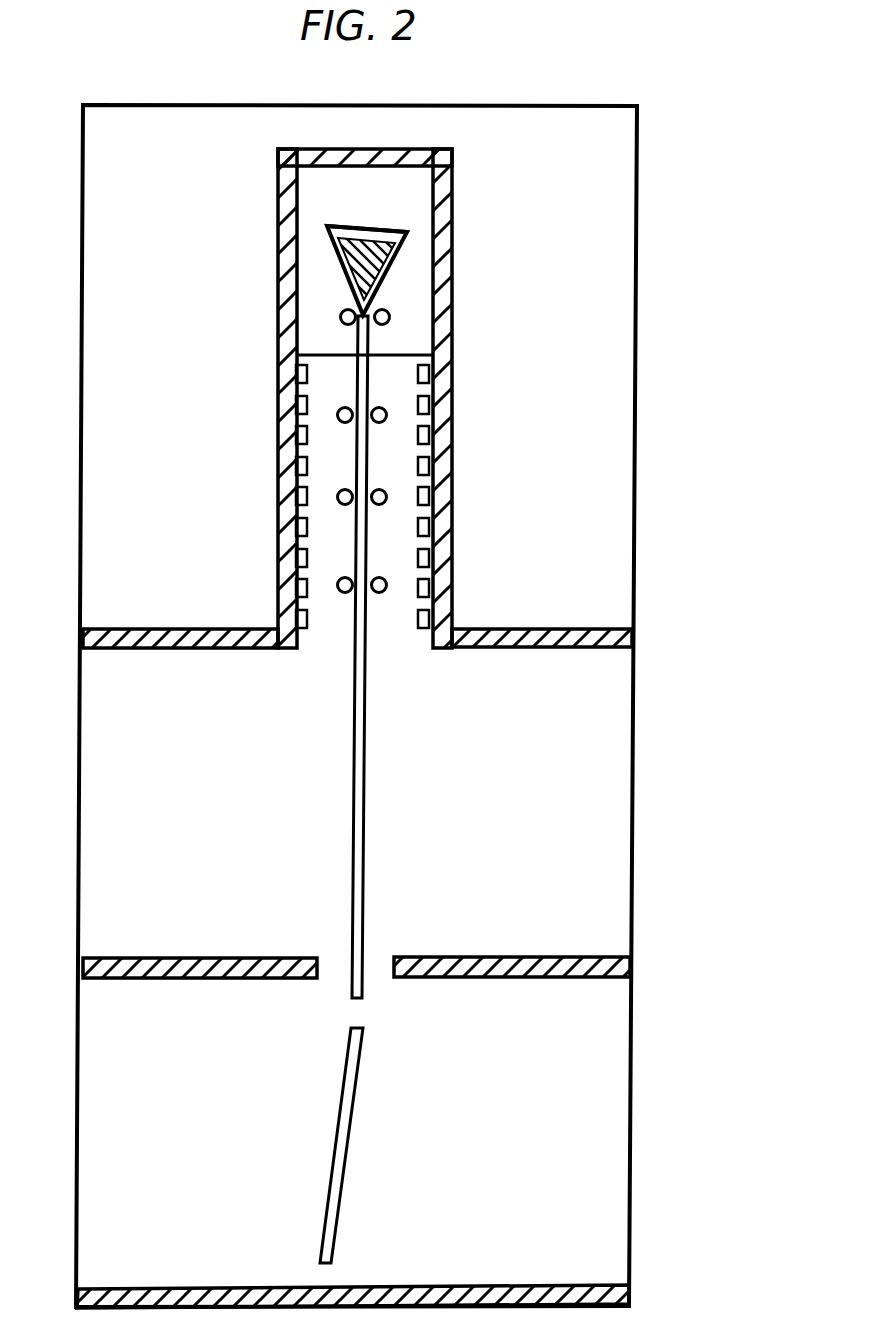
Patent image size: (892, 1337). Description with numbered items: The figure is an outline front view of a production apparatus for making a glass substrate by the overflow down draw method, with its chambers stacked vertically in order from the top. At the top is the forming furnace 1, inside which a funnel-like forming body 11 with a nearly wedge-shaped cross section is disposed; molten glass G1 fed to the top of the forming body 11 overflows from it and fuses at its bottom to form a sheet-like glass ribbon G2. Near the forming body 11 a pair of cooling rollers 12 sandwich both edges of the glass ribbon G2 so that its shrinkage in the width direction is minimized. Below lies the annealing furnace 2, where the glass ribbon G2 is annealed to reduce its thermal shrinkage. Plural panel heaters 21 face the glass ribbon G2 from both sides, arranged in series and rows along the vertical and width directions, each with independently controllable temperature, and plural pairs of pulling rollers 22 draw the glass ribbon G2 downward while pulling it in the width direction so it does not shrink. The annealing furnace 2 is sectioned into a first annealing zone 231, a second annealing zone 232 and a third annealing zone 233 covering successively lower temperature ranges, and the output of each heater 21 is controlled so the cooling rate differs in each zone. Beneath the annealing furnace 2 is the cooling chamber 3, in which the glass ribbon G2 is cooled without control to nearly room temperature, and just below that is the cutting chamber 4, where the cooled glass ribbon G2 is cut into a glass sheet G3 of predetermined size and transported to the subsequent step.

The forming furnace 1 is at (440, 251).
The annealing furnace 2 is at (340, 496).
The cooling chamber 3 is at (582, 770).
The cutting chamber 4 is at (583, 1065).
The forming body 11 is at (352, 272).
The cooling roller 12 is at (390, 309).
The heater 21 is at (340, 496).
The pulling roller 22 is at (344, 420).
The first annealing zone 231 is at (460, 368).
The second annealing zone 232 is at (460, 450).
The third annealing zone 233 is at (460, 535).
The molten glass G1 is at (362, 228).
The glass ribbon G2 is at (352, 742).
The glass sheet G3 is at (342, 1182).